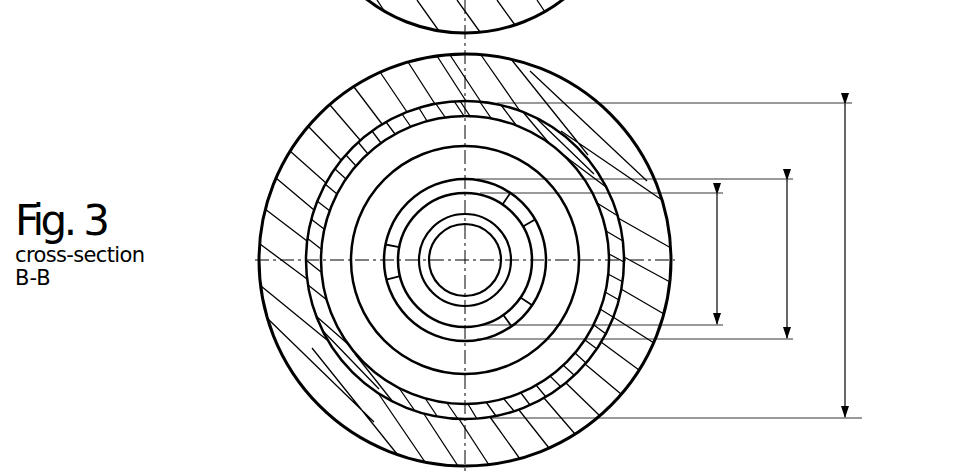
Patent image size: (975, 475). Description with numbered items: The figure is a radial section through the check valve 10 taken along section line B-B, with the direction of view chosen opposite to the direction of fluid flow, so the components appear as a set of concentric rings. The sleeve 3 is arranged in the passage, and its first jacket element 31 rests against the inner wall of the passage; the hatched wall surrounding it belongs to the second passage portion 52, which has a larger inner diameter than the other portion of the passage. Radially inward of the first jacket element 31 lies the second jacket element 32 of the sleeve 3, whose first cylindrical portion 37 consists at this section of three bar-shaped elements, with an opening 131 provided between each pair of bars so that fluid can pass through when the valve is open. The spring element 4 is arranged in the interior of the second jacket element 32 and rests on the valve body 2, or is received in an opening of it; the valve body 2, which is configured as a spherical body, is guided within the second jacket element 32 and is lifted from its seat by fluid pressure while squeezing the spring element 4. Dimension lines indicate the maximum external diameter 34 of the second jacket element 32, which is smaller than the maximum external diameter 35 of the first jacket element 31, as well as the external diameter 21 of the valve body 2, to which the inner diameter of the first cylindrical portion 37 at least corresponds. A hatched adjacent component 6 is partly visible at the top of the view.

The check valve 10 is at (222, 60).
The sleeve 3 is at (328, 176).
The opening 131 is at (396, 190).
The spring element 4 is at (453, 219).
The first jacket element 31 is at (328, 176).
The second passage portion 52 is at (298, 197).
The second jacket element 32 is at (388, 252).
The first cylindrical portion 37 is at (396, 266).
The valve body 2 is at (432, 303).
The second tube 6 is at (474, 237).
The maximum external diameter 34 is at (787, 236).
The external diameter 21 is at (717, 290).
The maximum external diameter 35 is at (845, 345).